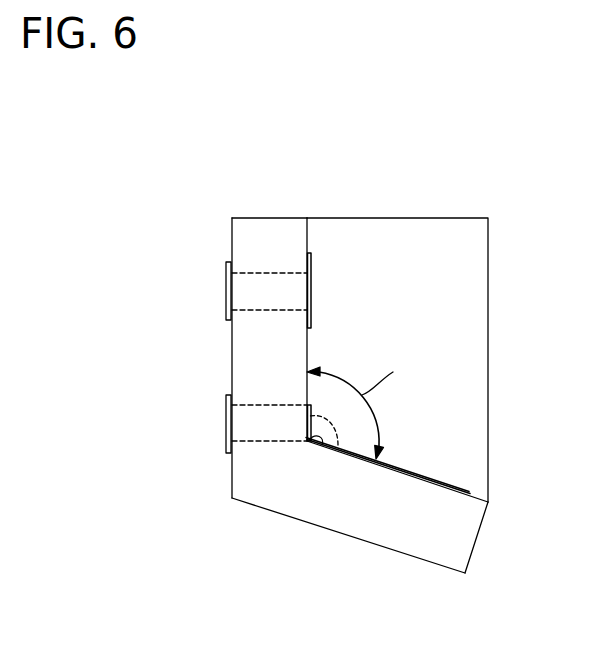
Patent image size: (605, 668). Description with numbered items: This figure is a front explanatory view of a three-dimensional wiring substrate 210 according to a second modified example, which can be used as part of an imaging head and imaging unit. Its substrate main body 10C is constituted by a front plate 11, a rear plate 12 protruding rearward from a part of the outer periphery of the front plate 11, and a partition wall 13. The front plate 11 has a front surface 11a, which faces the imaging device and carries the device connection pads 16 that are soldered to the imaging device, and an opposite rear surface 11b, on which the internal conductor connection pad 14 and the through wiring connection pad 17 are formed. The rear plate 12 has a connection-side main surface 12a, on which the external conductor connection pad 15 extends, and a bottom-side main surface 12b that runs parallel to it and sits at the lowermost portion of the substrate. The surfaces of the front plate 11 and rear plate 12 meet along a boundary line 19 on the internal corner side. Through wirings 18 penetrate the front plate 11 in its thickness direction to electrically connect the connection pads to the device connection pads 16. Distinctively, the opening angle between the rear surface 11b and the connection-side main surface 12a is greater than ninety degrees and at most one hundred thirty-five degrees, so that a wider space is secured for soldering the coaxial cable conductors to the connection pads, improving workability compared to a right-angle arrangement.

The substrate main body 10C is at (273, 218).
The three-dimensional wiring substrate 210 is at (418, 218).
The front plate 11 is at (285, 233).
The front surface 11a is at (232, 236).
The rear surface 11b is at (310, 230).
The rear plate 12 is at (467, 530).
The connection-side main surface 12a is at (483, 498).
The bottom-side main surface 12b is at (377, 545).
The partition wall 13 is at (458, 227).
The internal conductor connection pad 14 is at (313, 280).
The external conductor connection pad 15 is at (430, 478).
The device connection pad 16 is at (226, 290).
The through wiring connection pad 17 is at (338, 445).
The through wiring 18 is at (258, 270).
The boundary line 19 is at (322, 445).